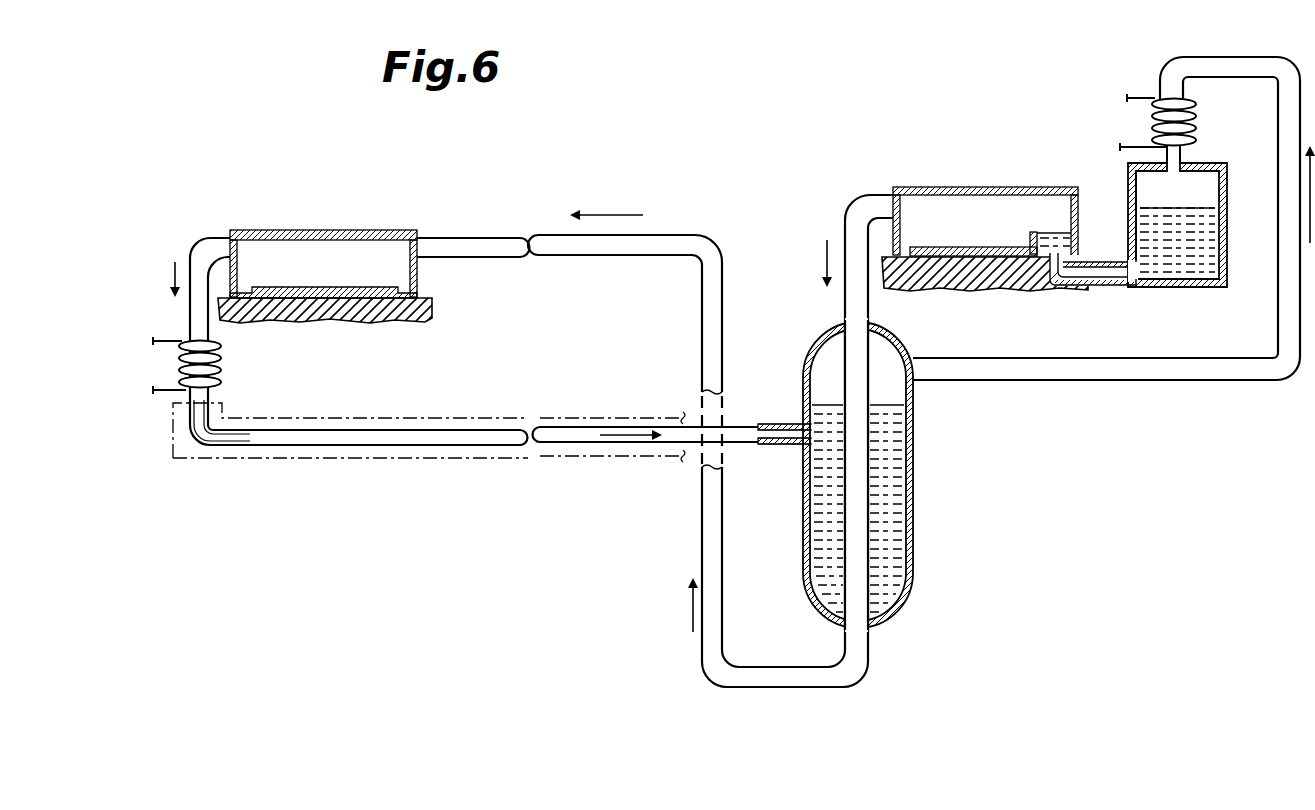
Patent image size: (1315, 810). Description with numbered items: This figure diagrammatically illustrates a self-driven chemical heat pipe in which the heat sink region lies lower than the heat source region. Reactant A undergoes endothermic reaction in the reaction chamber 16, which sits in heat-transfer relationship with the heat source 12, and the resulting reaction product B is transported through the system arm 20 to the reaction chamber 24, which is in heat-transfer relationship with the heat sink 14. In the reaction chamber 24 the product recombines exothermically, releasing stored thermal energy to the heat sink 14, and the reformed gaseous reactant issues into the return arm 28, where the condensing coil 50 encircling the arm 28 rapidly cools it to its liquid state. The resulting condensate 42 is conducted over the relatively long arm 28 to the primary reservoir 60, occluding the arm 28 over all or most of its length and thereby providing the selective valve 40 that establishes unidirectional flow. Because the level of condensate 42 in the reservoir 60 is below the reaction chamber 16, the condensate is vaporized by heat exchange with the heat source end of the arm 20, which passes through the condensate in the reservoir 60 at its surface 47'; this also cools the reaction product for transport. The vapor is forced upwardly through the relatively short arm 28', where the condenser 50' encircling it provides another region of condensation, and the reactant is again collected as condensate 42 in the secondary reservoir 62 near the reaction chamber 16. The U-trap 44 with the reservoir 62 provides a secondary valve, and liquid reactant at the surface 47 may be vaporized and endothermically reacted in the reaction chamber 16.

The heat source 12 is at (962, 275).
The heat sink 14 is at (365, 305).
The reaction chamber 16 is at (952, 207).
The system arm 20 is at (508, 241).
The reaction chamber 24 is at (355, 250).
The return arm 28 is at (500, 345).
The arm 28' is at (1106, 222).
The selective valve 40 is at (364, 466).
The condensate 42 is at (893, 535).
The U-trap 44 is at (1115, 283).
The surface of condensate pool 47 is at (1056, 188).
The surface of condensate 47' is at (791, 371).
The condensing coil 50 is at (184, 311).
The condenser 50' is at (1138, 98).
The primary reservoir 60 is at (905, 470).
The secondary reservoir 62 is at (1230, 180).